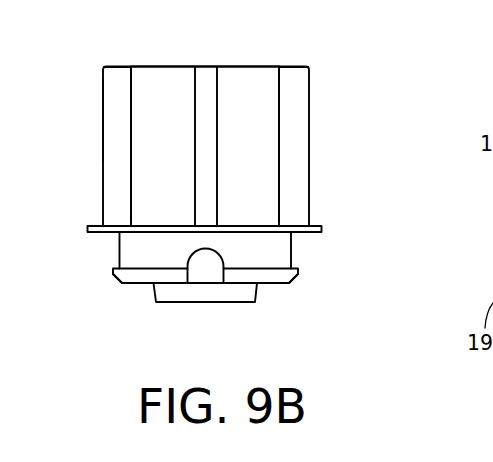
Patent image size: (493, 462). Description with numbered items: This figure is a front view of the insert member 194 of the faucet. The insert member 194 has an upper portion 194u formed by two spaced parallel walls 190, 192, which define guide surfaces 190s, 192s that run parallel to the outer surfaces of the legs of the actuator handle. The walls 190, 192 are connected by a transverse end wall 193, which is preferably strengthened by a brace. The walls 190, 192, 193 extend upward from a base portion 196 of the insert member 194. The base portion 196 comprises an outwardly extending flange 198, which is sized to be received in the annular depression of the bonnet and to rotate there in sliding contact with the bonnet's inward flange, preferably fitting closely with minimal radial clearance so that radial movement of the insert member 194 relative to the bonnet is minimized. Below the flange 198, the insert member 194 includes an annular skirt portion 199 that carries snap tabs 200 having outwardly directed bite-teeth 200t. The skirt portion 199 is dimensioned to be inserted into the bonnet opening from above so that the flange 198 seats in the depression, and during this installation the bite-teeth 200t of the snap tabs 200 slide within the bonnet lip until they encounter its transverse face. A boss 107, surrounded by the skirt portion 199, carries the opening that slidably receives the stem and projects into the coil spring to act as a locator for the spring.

The boss 107 is at (243, 293).
The wall 190 is at (297, 77).
The guide surface 190s is at (279, 93).
The wall 192 is at (115, 78).
The guide surface 192s is at (133, 92).
The transverse end wall 193 is at (252, 195).
The insert member 194 is at (352, 108).
The upper portion 194u is at (97, 172).
The base portion 196 is at (103, 225).
The flange 198 is at (305, 232).
The skirt portion 199 is at (112, 254).
The snap tab 200 is at (150, 253).
The bite-teeth 200t is at (162, 277).